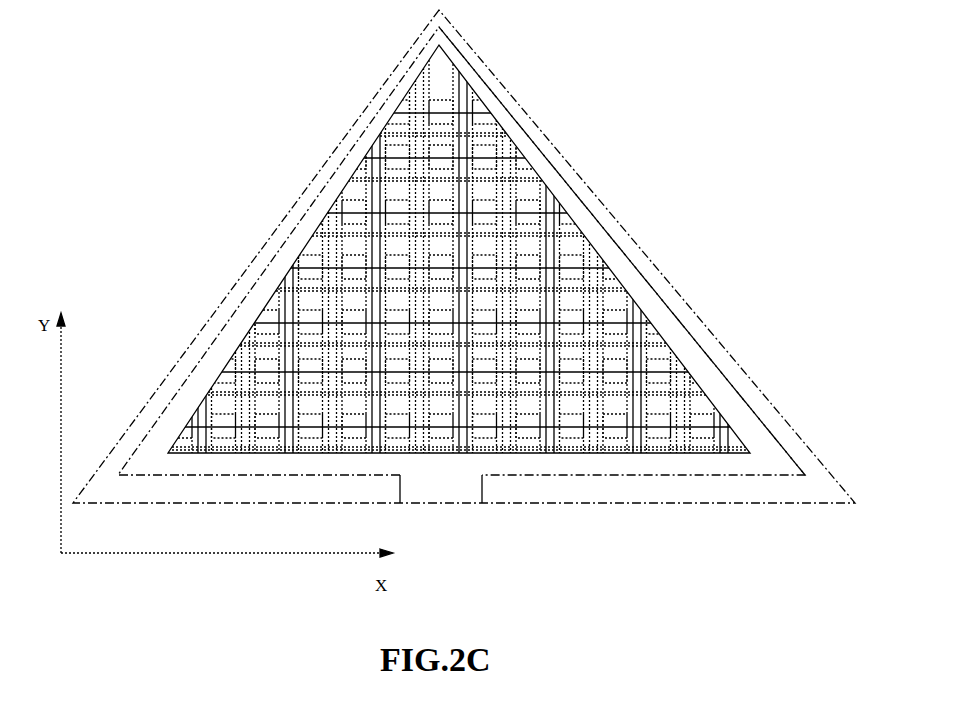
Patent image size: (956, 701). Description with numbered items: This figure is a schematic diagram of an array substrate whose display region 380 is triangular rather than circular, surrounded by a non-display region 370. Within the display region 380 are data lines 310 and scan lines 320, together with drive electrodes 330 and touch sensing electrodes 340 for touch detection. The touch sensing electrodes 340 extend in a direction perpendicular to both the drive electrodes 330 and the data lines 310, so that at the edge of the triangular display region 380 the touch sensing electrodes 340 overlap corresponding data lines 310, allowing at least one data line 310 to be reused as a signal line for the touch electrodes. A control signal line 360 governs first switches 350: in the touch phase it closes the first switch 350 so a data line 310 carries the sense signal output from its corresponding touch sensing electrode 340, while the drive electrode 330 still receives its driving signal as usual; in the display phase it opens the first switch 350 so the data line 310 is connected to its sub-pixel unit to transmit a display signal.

The data line 310 is at (355, 182).
The scan line 320 is at (403, 128).
The drive electrode 330 is at (472, 93).
The touch sensing electrode 340 is at (527, 208).
The first switch 350 is at (588, 212).
The control signal line 360 is at (655, 280).
The non-display region 370 is at (700, 358).
The display region 380 is at (525, 157).